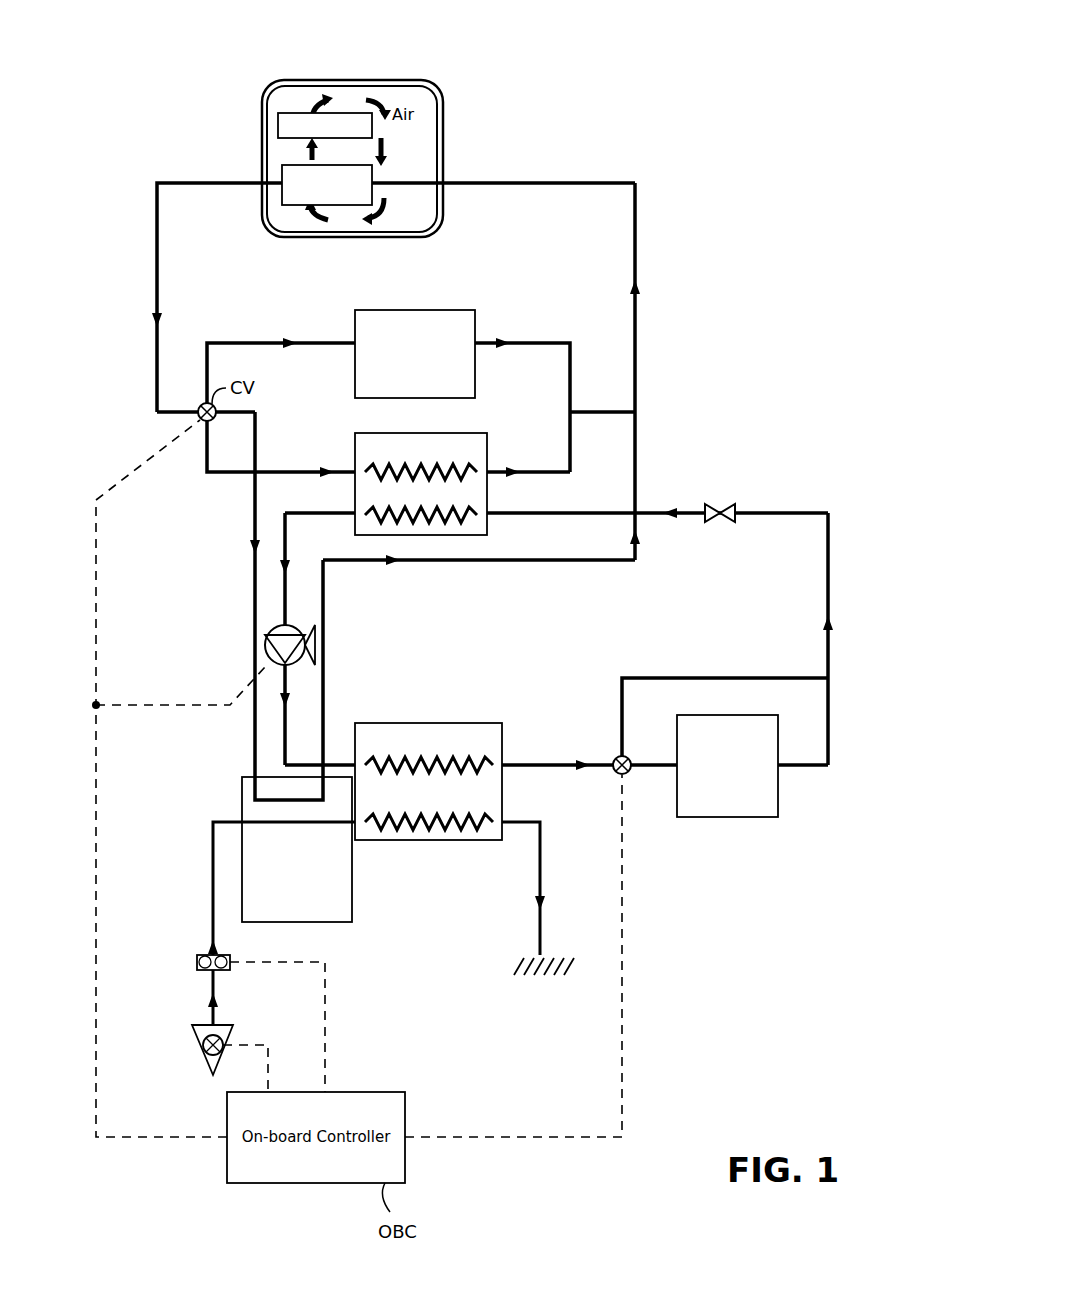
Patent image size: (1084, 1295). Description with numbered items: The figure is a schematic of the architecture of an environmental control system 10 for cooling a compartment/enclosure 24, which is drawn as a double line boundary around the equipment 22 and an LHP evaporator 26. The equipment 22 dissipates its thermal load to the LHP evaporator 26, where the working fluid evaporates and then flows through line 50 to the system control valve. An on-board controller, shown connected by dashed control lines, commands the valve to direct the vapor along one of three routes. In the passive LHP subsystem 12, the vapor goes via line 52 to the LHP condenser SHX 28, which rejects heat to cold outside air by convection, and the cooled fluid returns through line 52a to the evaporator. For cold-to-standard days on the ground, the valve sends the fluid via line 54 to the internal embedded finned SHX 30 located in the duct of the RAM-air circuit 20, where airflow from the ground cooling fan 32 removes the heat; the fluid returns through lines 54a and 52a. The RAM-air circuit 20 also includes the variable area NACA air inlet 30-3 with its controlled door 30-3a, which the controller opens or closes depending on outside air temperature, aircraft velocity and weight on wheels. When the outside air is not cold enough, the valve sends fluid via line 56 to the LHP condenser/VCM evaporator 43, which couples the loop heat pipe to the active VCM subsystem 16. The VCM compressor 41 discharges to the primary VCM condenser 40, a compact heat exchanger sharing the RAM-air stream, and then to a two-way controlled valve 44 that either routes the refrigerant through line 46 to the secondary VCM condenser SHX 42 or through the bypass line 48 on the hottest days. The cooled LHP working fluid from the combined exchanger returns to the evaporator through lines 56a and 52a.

The environmental control system 10 is at (718, 80).
The LHP subsystem 12 is at (818, 88).
The VCM subsystem 16 is at (842, 515).
The RAM-air circuit 20 is at (847, 770).
The equipment 22 is at (295, 110).
The compartment/enclosure 24 is at (412, 78).
The LHP evaporator 26 is at (340, 205).
The LHP condenser SHX 28 is at (444, 302).
The internal embedded finned SHX 30 is at (340, 850).
The variable area NACA air inlet 30-3 is at (204, 1032).
The NACA inlet controlled door 30-3a is at (222, 1036).
The ground cooling fan 32 is at (202, 952).
The VCM condenser 40 is at (472, 720).
The VCM compressor 41 is at (262, 650).
The secondary VCM condenser SHX 42 is at (762, 807).
The LHP condenser/VCM evaporator 43 is at (500, 446).
The two-way controlled valve 44 is at (612, 760).
The line 46 is at (636, 760).
The bypass line 48 is at (676, 694).
The line 50 is at (165, 236).
The line 52 is at (318, 348).
The line 52a is at (625, 240).
The line 54 is at (262, 514).
The line 54a is at (496, 550).
The line 56 is at (282, 482).
The line 56a is at (556, 434).